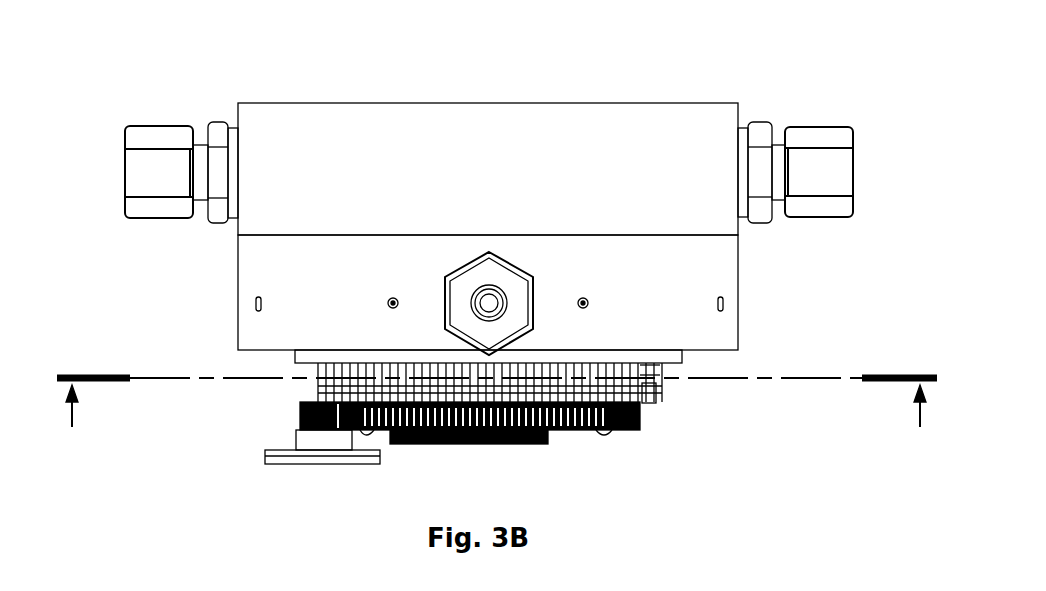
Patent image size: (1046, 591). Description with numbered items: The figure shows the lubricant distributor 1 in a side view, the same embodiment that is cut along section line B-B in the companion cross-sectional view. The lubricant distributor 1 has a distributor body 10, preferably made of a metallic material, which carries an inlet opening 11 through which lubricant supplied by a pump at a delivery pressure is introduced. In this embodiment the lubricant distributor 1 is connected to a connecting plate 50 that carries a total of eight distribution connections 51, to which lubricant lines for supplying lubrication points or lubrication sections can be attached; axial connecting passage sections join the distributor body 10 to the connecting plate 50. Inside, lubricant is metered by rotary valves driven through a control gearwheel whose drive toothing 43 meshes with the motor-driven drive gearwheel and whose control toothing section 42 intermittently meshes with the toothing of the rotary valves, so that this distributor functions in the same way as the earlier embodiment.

The lubricant distributor 1 is at (215, 73).
The distributor body 10 is at (720, 334).
The inlet opening 11 is at (493, 300).
The control toothing section 42 is at (300, 412).
The drive toothing 43 is at (642, 428).
The connecting plate 50 is at (713, 118).
The distribution connections 51 is at (108, 169).